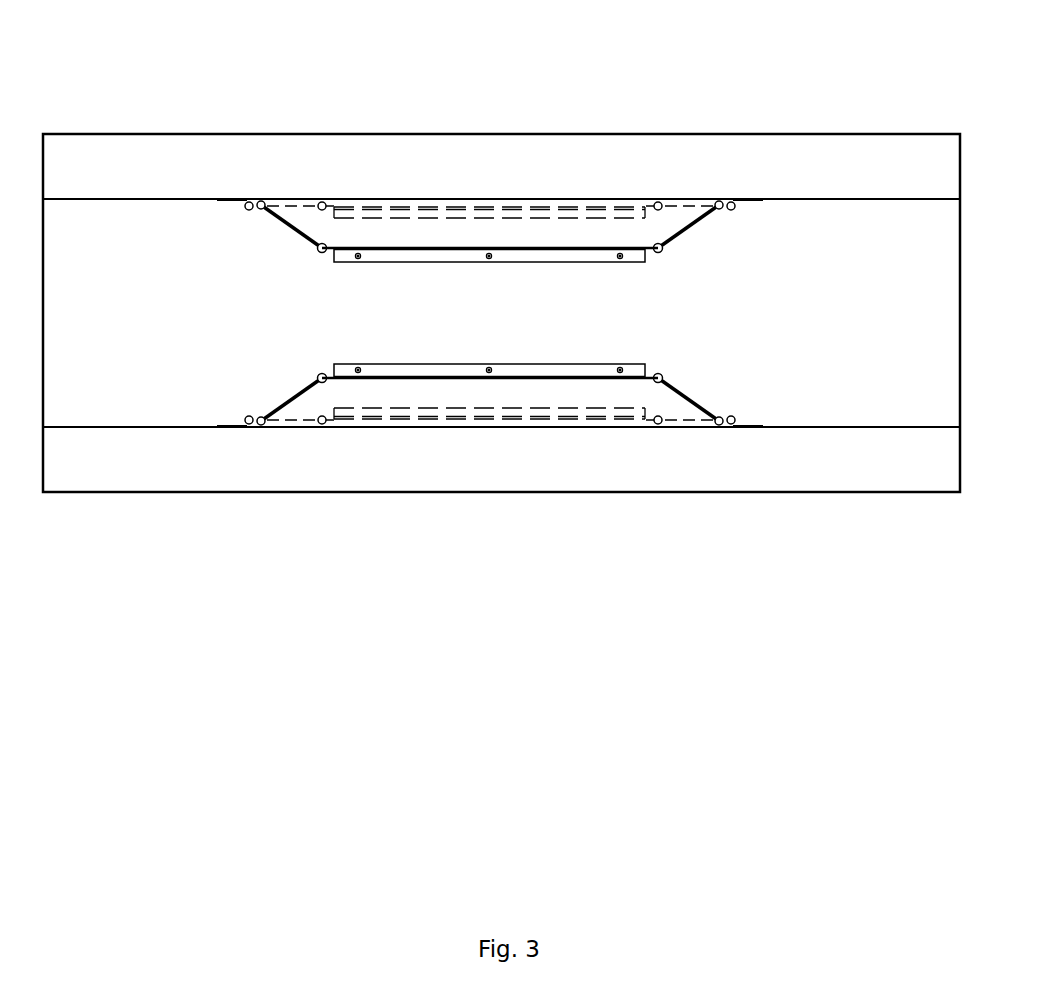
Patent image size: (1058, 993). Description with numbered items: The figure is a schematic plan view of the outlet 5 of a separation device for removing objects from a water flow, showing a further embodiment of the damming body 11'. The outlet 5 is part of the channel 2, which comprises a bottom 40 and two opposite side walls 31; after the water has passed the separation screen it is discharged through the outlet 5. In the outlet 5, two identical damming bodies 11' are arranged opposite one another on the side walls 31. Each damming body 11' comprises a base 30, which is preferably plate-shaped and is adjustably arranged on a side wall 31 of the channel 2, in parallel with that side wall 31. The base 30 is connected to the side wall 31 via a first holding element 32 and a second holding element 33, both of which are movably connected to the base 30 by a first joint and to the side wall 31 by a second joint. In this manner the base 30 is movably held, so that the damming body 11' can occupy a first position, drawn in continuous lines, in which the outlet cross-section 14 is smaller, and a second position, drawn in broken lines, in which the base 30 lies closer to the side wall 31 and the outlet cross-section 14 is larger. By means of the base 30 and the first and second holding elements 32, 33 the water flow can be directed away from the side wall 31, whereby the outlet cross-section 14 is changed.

The channel 2 is at (146, 240).
The outlet 5 is at (172, 365).
The damming body 11' is at (489, 306).
The outlet cross-section 14 is at (389, 330).
The base 30 is at (420, 262).
The side wall 31 is at (820, 168).
The first holding element 32 is at (692, 204).
The second holding element 33 is at (289, 204).
The bottom 40 is at (853, 250).